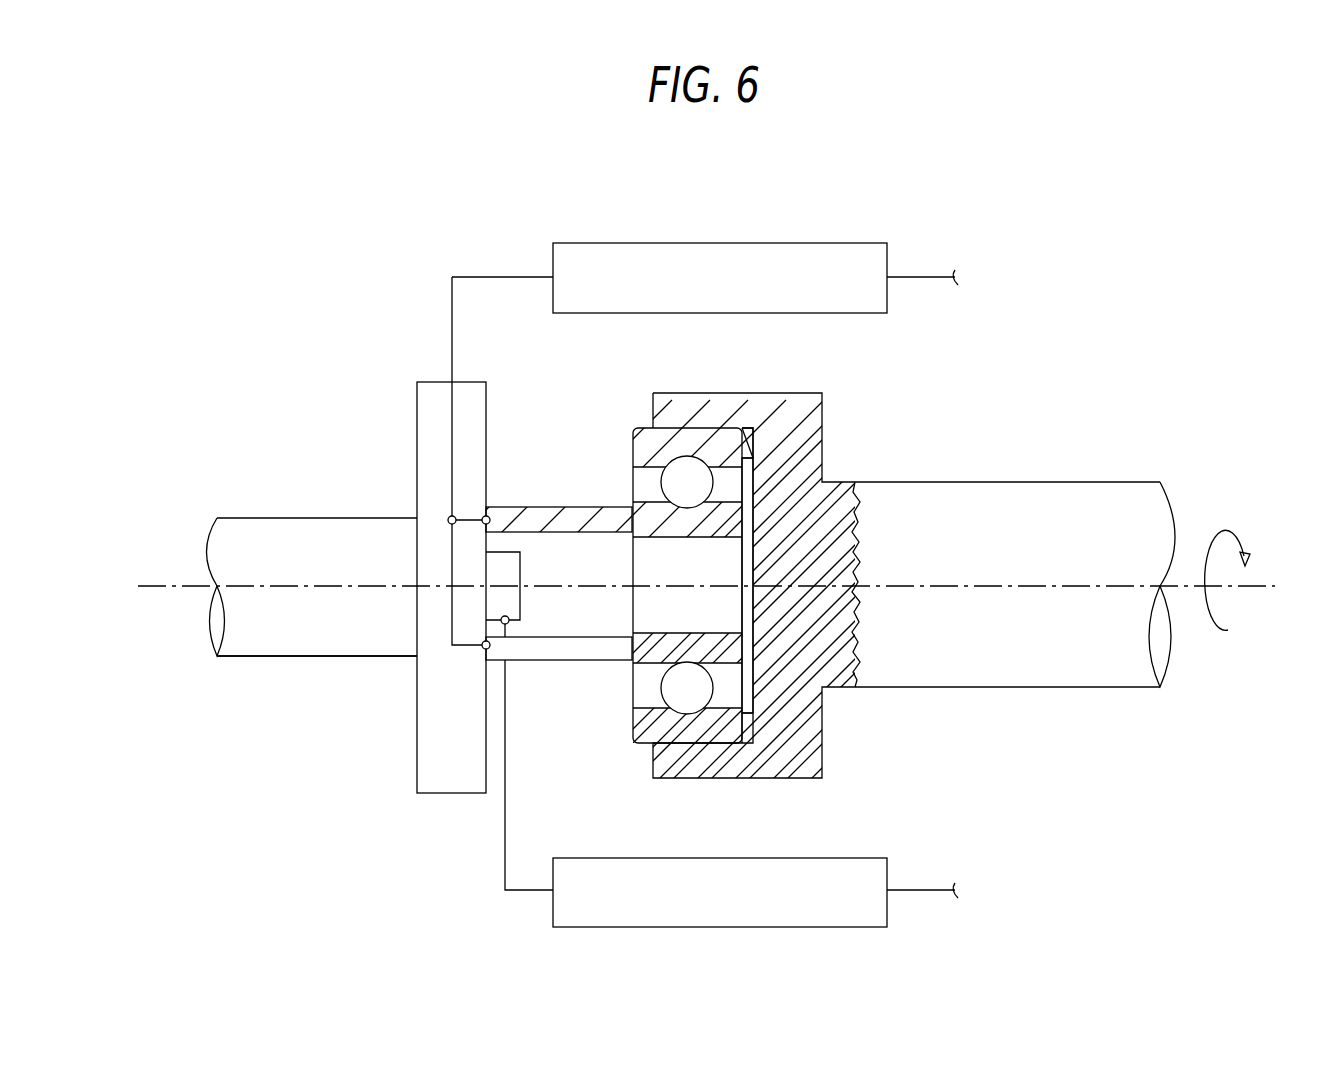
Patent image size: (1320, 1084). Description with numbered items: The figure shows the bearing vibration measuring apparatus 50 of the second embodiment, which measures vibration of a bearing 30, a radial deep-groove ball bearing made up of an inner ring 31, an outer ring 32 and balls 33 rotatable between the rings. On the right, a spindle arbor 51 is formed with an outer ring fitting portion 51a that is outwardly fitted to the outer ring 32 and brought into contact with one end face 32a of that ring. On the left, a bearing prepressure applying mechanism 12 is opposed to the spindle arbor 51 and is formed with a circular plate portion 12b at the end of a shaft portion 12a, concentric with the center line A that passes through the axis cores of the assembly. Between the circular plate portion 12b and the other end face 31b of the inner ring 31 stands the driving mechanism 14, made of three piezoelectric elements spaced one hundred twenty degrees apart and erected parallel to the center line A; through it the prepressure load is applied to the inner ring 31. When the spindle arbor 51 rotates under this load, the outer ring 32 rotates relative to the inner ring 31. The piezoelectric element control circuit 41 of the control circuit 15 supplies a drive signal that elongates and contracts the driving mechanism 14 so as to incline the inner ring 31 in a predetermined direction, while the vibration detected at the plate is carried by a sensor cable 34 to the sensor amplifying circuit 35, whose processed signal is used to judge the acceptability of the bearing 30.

The bearing prepressure applying mechanism 12 is at (318, 518).
The shaft portion 12a is at (330, 656).
The circular plate portion 12b is at (432, 386).
The driving mechanism 14 is at (526, 507).
The control circuit 15 is at (757, 242).
The bearing 30 is at (660, 672).
The inner ring 31 is at (745, 510).
The other end face of the inner ring 31b is at (632, 522).
The outer ring 32 is at (660, 669).
The one end face of the outer ring 32a is at (744, 450).
The balls 33 is at (672, 688).
The sensor cable 34 is at (505, 862).
The sensor amplifying circuit 35 is at (675, 858).
The piezoelectric element control circuit 41 is at (670, 243).
The bearing vibration measuring apparatus 50 is at (1063, 241).
The spindle arbor 51 is at (1014, 687).
The outer ring fitting portion 51a is at (660, 669).
The center line A is at (168, 597).